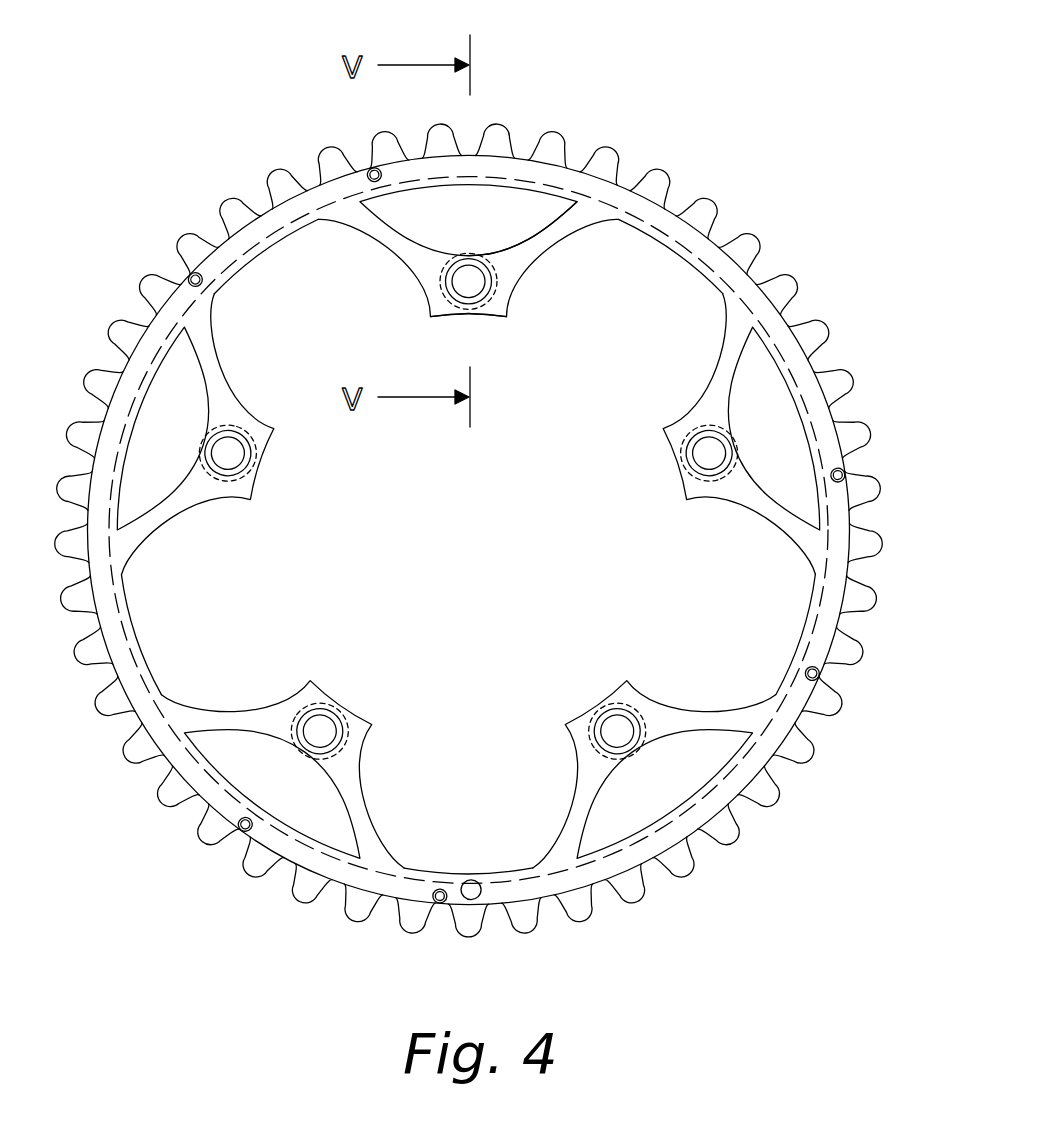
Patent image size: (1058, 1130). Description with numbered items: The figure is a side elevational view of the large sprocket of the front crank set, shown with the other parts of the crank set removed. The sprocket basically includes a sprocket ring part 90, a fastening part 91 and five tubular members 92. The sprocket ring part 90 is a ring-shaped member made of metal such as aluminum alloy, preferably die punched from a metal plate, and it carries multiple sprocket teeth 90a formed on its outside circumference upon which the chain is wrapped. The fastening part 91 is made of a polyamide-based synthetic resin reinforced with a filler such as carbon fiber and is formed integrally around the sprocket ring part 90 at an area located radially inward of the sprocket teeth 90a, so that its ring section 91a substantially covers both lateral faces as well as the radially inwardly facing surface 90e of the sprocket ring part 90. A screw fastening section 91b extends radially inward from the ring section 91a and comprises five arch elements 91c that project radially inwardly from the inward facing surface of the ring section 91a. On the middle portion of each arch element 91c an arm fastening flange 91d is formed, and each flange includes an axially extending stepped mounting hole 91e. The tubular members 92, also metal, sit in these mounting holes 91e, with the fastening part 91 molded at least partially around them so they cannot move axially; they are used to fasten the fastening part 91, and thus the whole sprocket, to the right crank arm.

The sprocket ring part 90 is at (493, 479).
The sprocket teeth 90a is at (773, 295).
The radially inwardly facing surface 90e is at (274, 244).
The fastening part 91 is at (575, 240).
The ring section 91a is at (569, 183).
The screw fastening section 91b is at (503, 318).
The arch element 91c is at (536, 255).
The arm fastening flange 91d is at (430, 317).
The mounting hole 91e is at (485, 272).
The tubular member 92 is at (443, 268).